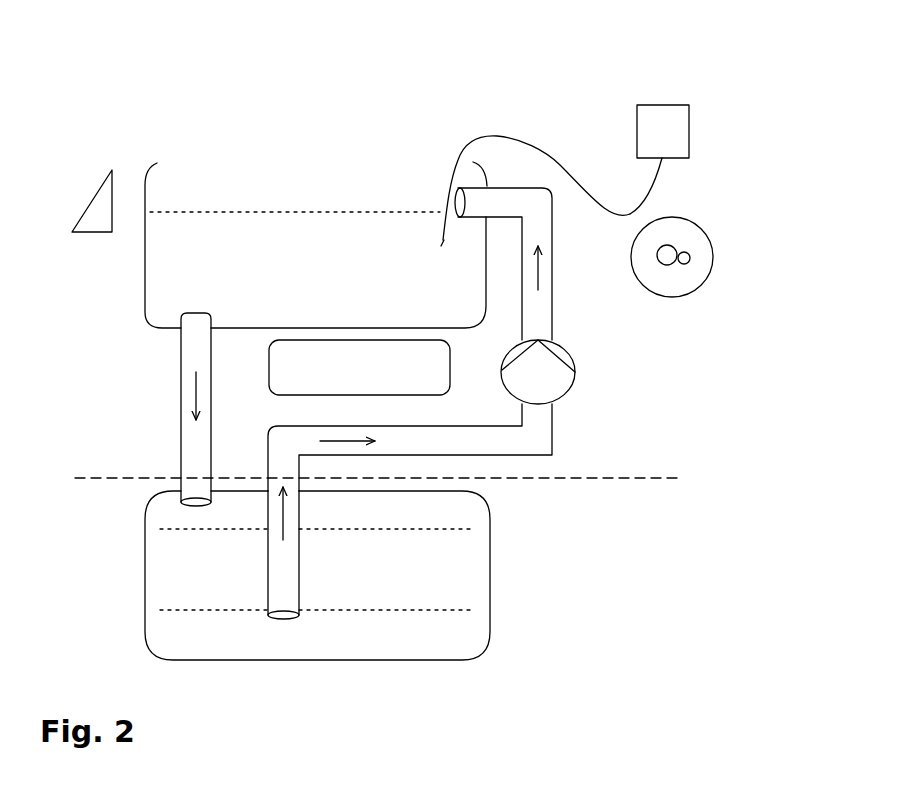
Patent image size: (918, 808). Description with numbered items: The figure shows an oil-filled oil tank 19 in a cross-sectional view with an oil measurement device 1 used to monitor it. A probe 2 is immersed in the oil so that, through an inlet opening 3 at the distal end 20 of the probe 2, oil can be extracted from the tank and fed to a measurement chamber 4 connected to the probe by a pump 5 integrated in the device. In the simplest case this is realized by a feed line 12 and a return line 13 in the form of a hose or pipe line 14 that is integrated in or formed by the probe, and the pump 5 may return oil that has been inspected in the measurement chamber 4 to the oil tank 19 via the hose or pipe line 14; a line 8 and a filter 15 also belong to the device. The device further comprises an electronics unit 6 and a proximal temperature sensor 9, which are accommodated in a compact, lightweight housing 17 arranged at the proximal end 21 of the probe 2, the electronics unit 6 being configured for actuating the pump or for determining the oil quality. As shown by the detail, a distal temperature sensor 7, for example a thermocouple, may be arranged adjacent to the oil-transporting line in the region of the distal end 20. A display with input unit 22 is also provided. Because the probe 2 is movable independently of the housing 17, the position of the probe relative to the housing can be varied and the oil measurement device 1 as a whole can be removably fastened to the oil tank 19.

The oil measurement device 1 is at (718, 112).
The probe 2 is at (483, 134).
The inlet opening 3 is at (438, 250).
The measurement chamber 4 is at (650, 123).
The pump 5 is at (562, 385).
The electronics unit 6 is at (359, 367).
The distal temperature sensor 7 is at (691, 263).
The line 8 is at (605, 219).
The proximal temperature sensor 9 is at (676, 83).
The feed line 12 is at (181, 376).
The return line 13 is at (553, 295).
The hose or pipe line 14 is at (605, 219).
The filter 15 is at (492, 611).
The housing 17 is at (700, 83).
The oil tank 19 is at (148, 313).
The distal end of the probe 20 is at (417, 225).
The proximal end of the probe 21 is at (680, 166).
The display with input unit 22 is at (85, 232).